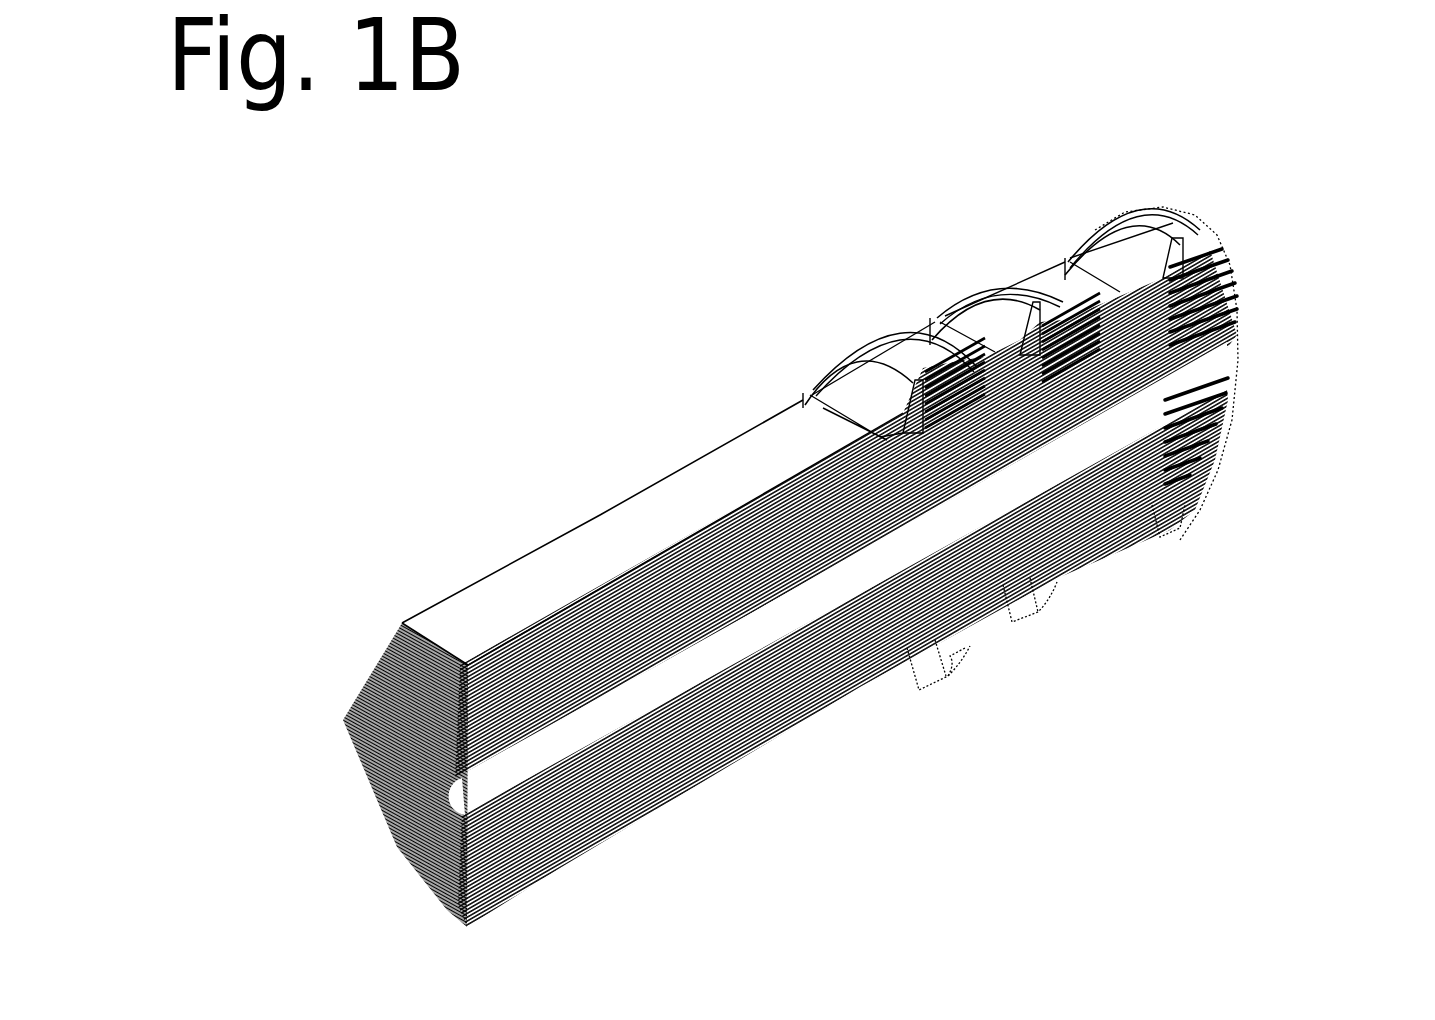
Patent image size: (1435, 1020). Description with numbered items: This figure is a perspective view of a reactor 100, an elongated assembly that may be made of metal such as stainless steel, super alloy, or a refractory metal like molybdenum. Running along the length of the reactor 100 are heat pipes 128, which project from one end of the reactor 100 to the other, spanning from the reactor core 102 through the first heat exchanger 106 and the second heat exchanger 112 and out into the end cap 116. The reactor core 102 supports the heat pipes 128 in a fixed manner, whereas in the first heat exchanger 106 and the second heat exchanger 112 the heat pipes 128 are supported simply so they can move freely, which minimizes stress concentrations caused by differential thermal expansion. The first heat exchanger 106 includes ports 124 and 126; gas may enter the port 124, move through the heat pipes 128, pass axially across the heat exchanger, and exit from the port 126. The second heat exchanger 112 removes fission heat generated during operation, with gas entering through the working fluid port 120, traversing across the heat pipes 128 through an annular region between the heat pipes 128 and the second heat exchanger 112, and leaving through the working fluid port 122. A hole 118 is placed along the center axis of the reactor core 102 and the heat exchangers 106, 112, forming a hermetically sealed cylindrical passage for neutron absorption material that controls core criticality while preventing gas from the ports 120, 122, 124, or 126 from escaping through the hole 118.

The reactor 100 is at (298, 520).
The reactor core 102 is at (570, 562).
The first heat exchanger 106 is at (865, 357).
The second heat exchanger 112 is at (1087, 262).
The end cap 116 is at (1200, 234).
The hole 118 is at (400, 830).
The working fluid port 120 is at (1037, 615).
The working fluid port 122 is at (1170, 537).
The port 124 is at (922, 683).
The port 126 is at (957, 666).
The heat pipes 128 is at (664, 810).